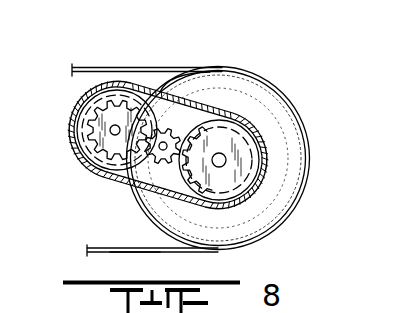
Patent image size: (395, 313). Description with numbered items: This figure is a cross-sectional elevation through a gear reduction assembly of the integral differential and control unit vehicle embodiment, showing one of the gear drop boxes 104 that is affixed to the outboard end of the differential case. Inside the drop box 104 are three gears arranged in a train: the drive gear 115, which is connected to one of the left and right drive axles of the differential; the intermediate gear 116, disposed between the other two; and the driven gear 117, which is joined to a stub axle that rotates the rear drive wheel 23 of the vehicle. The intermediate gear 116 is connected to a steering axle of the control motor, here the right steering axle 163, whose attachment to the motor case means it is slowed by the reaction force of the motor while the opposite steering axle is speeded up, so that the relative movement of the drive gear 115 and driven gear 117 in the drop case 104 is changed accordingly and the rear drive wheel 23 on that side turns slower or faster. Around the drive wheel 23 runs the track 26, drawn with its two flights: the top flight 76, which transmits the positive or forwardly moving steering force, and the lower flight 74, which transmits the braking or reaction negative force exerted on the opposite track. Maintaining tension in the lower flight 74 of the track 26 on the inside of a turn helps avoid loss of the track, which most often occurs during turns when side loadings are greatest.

The rear drive wheel 23 is at (292, 138).
The track 26 is at (102, 247).
The lower flight 74 is at (136, 253).
The top flight 76 is at (100, 67).
The gear drop box 104 is at (72, 118).
The drive gear 115 is at (132, 107).
The intermediate gear 116 is at (152, 160).
The driven gear 117 is at (210, 122).
The right steering axle 163 is at (163, 151).